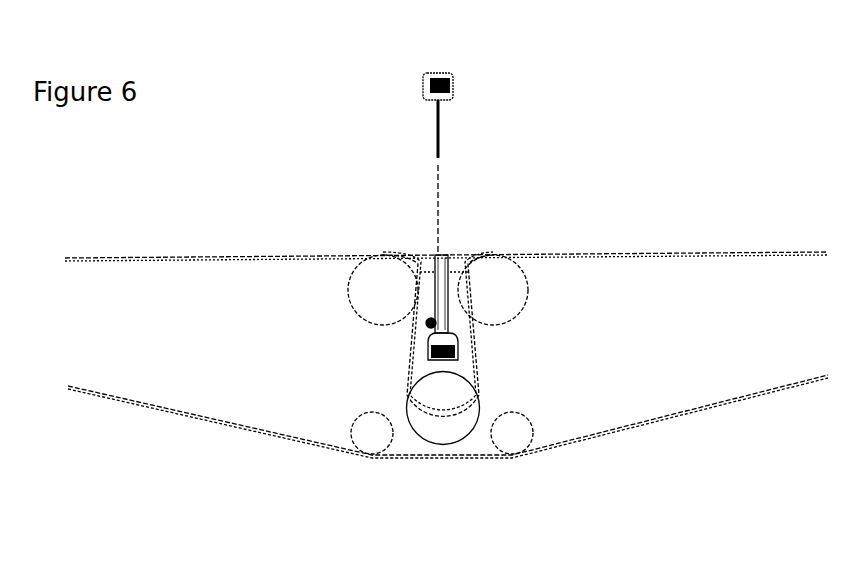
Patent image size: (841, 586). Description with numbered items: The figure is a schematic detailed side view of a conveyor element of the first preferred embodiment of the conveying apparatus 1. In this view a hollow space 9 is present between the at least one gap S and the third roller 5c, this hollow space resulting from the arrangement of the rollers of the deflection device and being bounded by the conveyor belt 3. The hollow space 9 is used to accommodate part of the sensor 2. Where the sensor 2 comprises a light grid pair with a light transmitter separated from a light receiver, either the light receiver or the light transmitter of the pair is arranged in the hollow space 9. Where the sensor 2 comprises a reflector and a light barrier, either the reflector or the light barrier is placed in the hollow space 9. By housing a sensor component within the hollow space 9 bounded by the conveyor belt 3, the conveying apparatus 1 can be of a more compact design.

The conveying apparatus 1 is at (548, 212).
The sensor 2 is at (430, 73).
The conveyor belt 3 is at (688, 248).
The third roller 5c is at (443, 423).
The hollow space 9 is at (425, 310).
The gap S is at (467, 243).